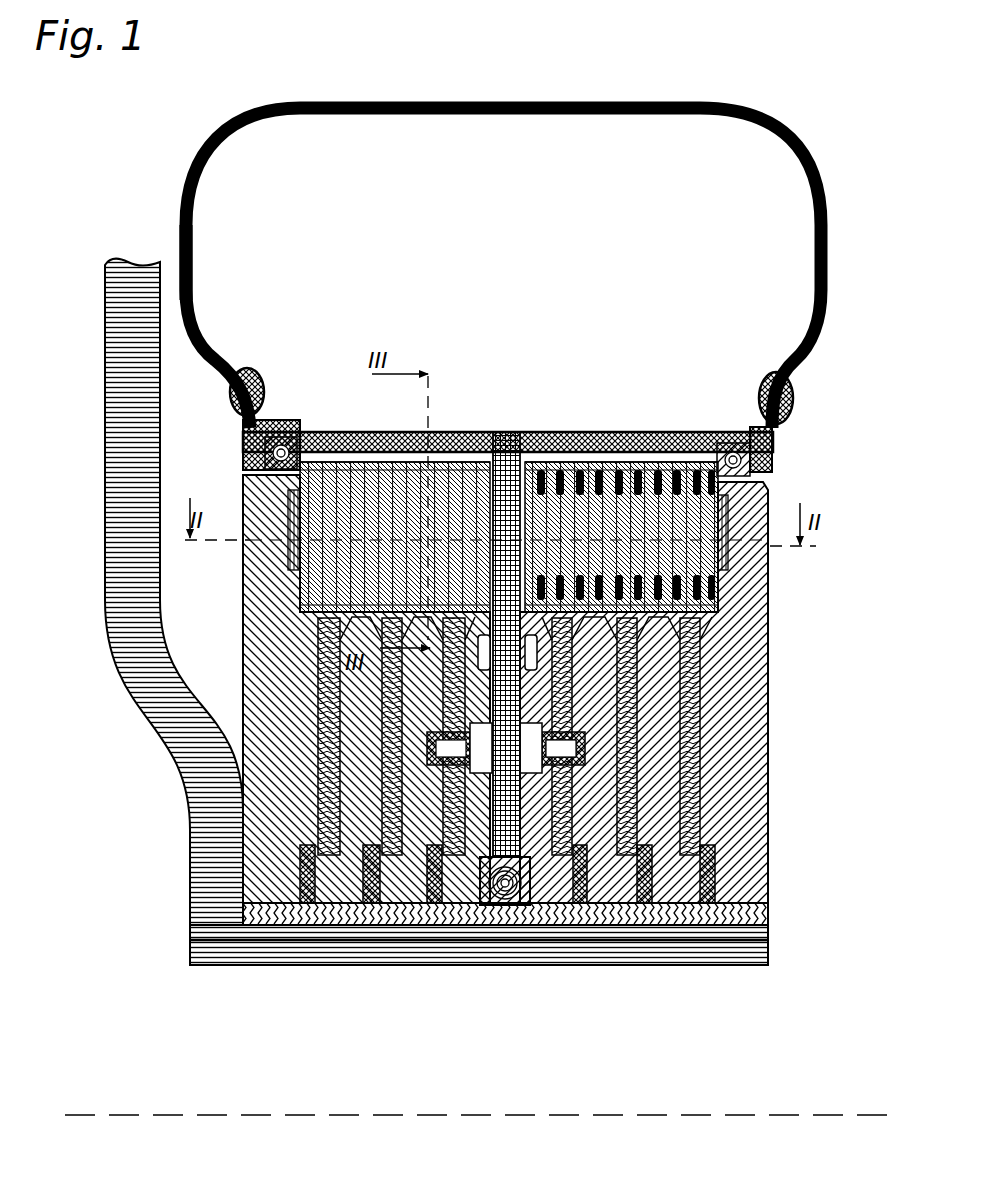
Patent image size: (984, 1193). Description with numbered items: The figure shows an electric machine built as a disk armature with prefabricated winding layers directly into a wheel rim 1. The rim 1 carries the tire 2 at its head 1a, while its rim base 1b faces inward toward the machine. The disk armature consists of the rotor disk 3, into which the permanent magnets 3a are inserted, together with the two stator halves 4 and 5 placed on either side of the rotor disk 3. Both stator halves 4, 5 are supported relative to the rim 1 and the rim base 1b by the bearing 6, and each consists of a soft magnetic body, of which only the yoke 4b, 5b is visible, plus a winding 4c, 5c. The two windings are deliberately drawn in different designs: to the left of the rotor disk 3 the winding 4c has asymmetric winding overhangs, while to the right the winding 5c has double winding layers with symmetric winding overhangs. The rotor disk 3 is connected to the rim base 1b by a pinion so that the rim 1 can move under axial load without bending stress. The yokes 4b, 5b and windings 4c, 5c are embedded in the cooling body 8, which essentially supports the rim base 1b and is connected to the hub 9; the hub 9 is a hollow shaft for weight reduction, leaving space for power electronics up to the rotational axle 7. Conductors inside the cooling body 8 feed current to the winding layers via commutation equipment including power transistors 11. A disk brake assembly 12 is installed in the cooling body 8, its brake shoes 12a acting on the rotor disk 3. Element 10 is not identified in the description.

The wheel rim 1 is at (236, 426).
The head of the rim 1a is at (632, 432).
The rim base 1b is at (790, 393).
The tire 2 is at (514, 432).
The rotor disk 3 is at (566, 432).
The permanent magnets 3a is at (521, 513).
The stator half 4 is at (290, 578).
The yoke 4b is at (287, 495).
The winding 4c is at (285, 555).
The stator half 5 is at (724, 587).
The yoke 5b is at (763, 482).
The winding 5c is at (770, 515).
The bearing 6 is at (774, 431).
The rotational axle 7 is at (700, 1117).
The cooling body 8 is at (270, 695).
The hub 9 is at (768, 945).
The bottom plate 10 is at (768, 908).
The power transistors 11 is at (725, 862).
The disk brake assembly 12 is at (592, 740).
The brake shoes 12a is at (640, 705).